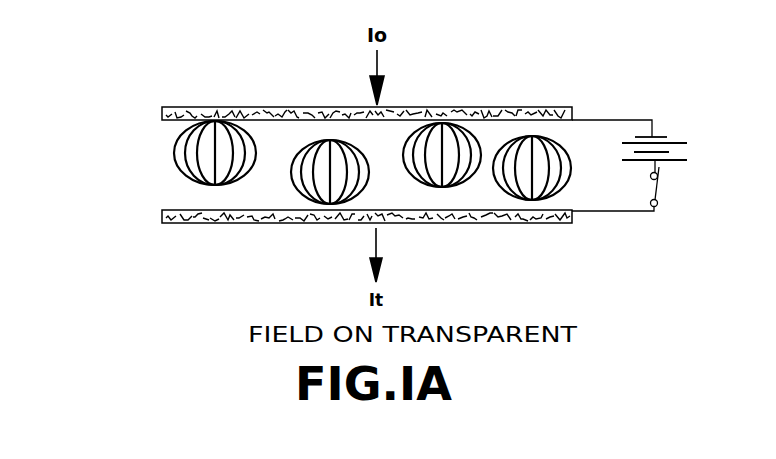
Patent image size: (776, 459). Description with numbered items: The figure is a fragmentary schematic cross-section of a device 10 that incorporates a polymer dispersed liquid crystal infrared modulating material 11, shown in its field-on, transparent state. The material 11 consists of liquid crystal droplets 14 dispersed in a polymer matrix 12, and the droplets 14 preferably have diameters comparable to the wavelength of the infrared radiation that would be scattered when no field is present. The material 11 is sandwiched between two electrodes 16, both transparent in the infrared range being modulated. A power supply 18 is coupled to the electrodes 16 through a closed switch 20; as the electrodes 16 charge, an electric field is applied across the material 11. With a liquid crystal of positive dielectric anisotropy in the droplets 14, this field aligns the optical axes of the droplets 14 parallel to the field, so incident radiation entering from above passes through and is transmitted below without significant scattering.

The device 10 is at (430, 169).
The infrared modulating material 11 is at (486, 128).
The polymer matrix 12 is at (399, 169).
The liquid crystal droplets 14 is at (542, 193).
The electrodes 16 is at (287, 107).
The power supply 18 is at (696, 134).
The switch 20 is at (662, 183).